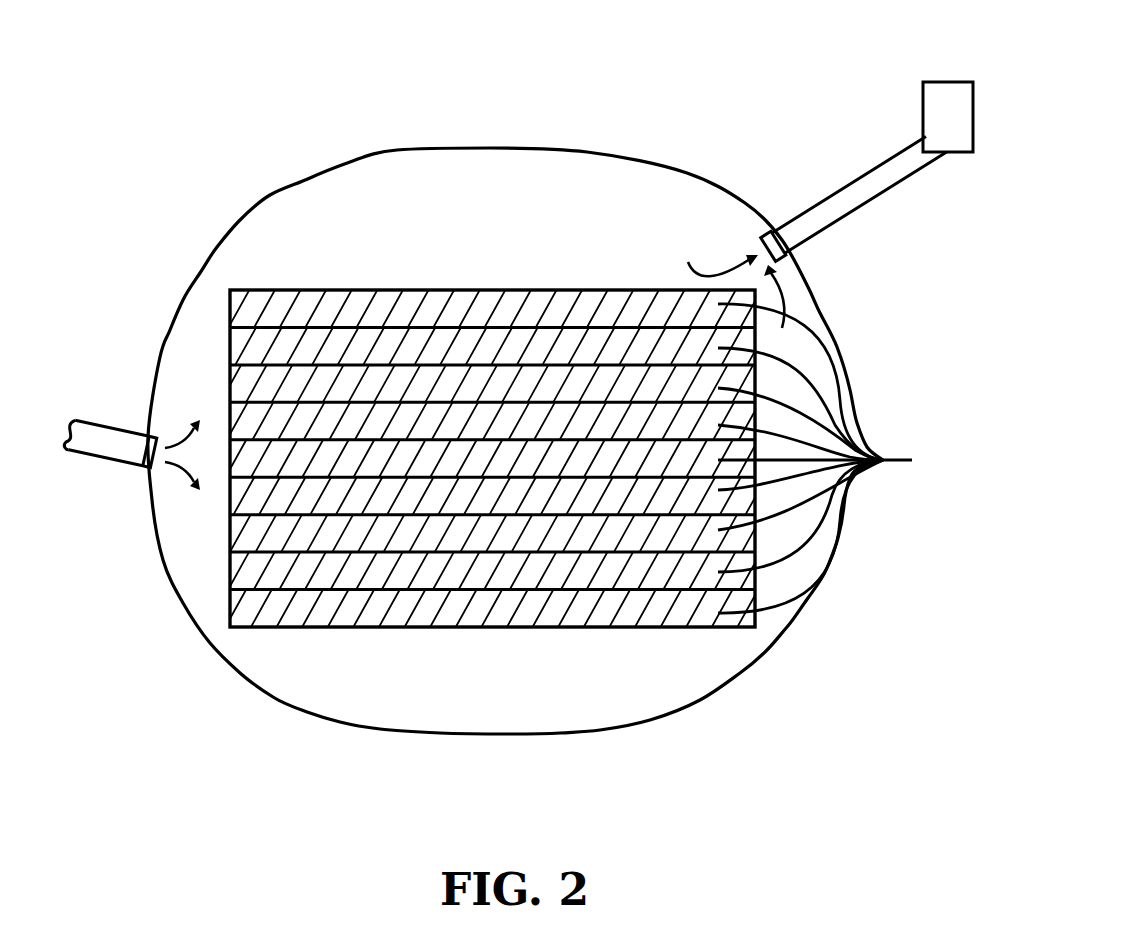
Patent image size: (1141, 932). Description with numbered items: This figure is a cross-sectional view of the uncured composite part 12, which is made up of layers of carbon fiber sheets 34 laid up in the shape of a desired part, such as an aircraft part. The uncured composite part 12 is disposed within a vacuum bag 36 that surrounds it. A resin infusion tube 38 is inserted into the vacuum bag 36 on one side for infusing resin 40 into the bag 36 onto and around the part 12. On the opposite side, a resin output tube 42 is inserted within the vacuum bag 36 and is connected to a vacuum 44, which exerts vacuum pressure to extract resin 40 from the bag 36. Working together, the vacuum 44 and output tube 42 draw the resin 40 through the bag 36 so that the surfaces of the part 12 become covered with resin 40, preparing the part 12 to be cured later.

The uncured composite part 12 is at (530, 290).
The carbon fiber sheets 34 is at (832, 458).
The vacuum bag 36 is at (397, 150).
The resin infusion tube 38 is at (105, 427).
The resin 40 is at (112, 447).
The resin output tube 42 is at (840, 223).
The vacuum 44 is at (947, 93).